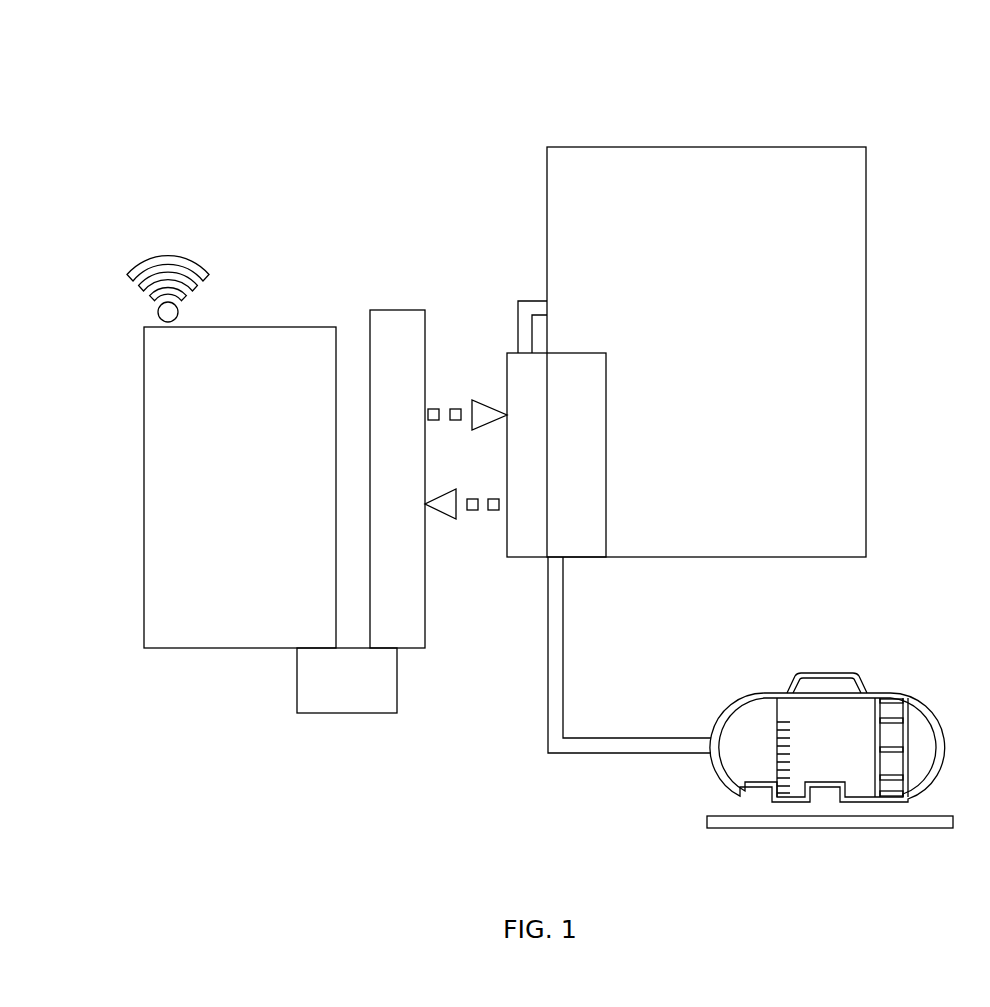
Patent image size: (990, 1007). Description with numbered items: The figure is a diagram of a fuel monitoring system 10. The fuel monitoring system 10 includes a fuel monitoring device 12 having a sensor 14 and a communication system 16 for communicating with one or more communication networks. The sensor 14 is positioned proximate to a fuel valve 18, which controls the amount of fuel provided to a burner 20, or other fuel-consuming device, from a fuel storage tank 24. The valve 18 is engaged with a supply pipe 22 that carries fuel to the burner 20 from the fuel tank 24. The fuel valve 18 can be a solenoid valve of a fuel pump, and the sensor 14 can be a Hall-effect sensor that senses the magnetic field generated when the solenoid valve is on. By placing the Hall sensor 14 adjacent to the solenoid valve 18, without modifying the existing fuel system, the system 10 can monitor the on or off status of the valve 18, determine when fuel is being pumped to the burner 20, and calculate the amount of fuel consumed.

The fuel monitoring system 10 is at (888, 75).
The fuel monitoring device 12 is at (310, 258).
The sensor 14 is at (403, 310).
The communication system 16 is at (268, 327).
The fuel valve 18 is at (567, 485).
The burner 20 is at (723, 371).
The supply pipe 22 is at (563, 677).
The fuel storage tank 24 is at (920, 700).